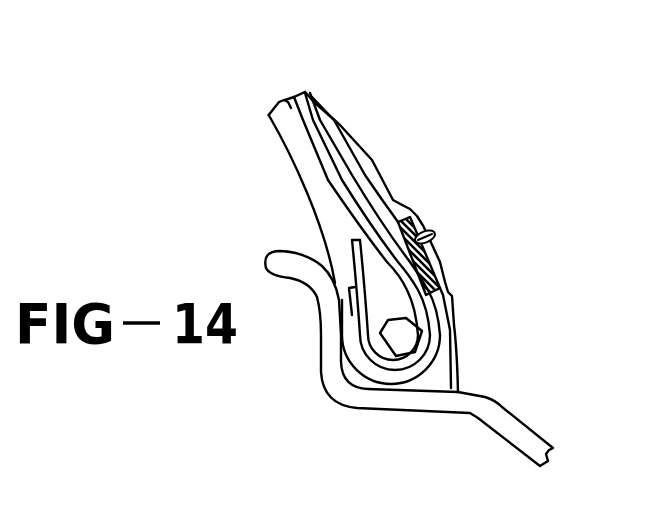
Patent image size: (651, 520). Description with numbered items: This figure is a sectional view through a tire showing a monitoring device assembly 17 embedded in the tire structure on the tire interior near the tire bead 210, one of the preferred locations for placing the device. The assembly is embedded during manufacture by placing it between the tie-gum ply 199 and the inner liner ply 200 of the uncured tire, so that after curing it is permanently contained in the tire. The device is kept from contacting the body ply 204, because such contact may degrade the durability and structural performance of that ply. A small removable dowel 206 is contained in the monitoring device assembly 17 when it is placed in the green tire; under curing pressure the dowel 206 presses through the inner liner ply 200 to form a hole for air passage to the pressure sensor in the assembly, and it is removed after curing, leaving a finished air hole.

The body ply 204 is at (292, 112).
The tie-gum ply 199 is at (312, 125).
The inner liner ply 200 is at (340, 140).
The removable dowel 206 is at (433, 235).
The monitoring device assembly 17 is at (446, 275).
The tire bead 210 is at (402, 340).